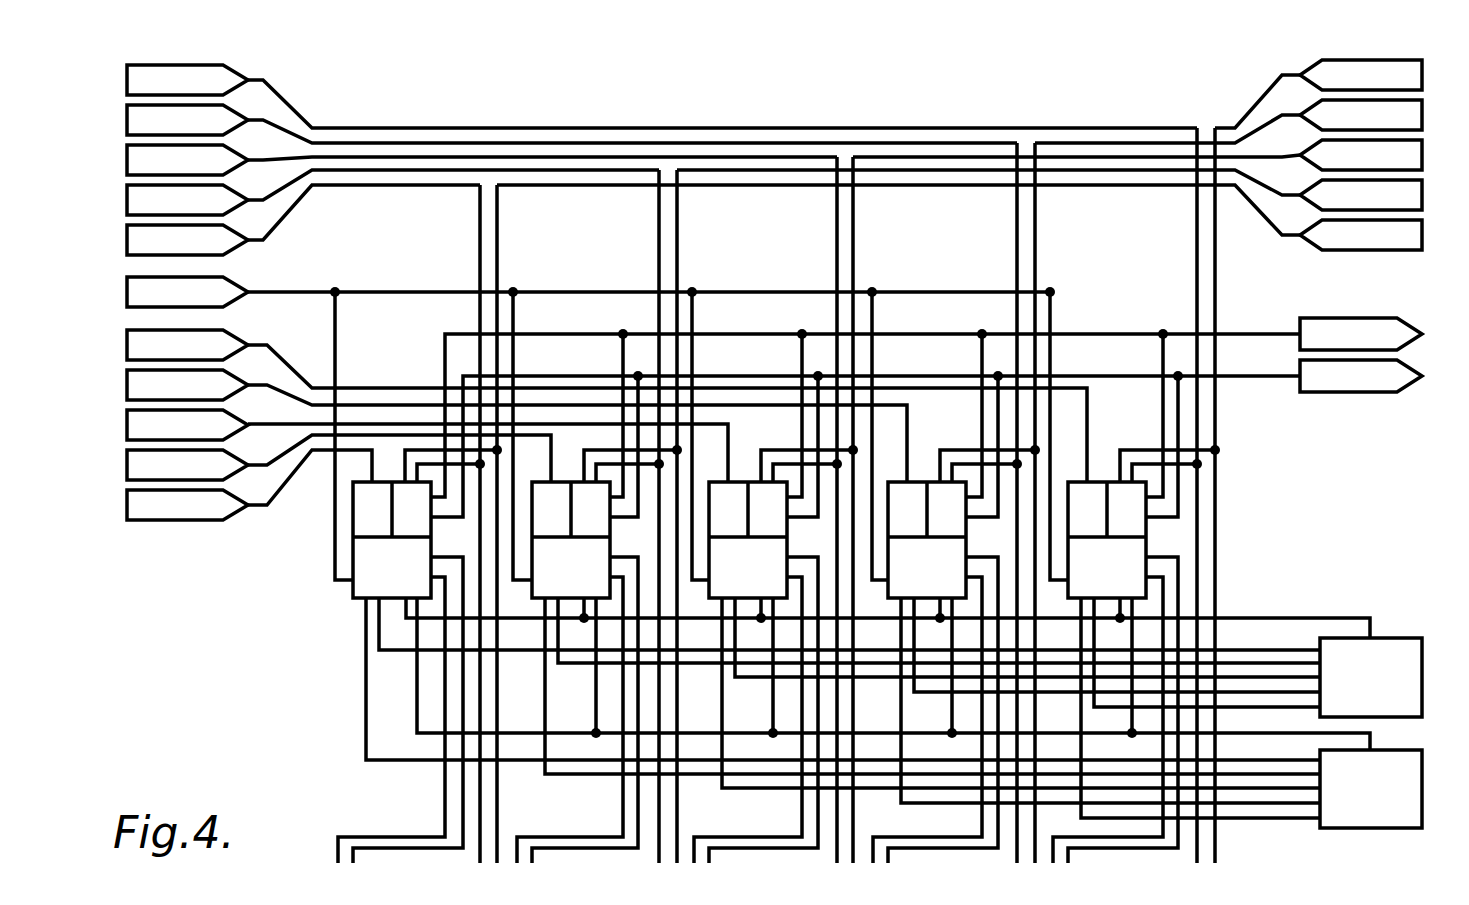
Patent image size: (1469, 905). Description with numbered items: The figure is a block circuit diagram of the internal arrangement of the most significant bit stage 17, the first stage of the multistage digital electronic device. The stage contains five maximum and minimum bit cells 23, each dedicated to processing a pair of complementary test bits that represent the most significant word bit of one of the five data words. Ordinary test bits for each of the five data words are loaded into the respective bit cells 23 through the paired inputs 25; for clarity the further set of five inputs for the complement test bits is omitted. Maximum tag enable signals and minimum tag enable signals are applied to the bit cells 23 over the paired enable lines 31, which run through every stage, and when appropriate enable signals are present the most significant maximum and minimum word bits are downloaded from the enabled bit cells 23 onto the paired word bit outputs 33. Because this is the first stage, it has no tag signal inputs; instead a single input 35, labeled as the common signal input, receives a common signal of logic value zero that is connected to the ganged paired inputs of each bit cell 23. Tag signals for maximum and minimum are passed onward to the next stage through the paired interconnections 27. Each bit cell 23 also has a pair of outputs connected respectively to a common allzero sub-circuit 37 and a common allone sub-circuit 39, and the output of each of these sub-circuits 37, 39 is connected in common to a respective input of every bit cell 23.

The most significant bit stage 17 is at (795, 471).
The maximum and minimum bit cell 23 is at (749, 540).
The paired inputs 25 is at (280, 373).
The paired interconnections 27 is at (340, 858).
The paired enable lines 31 is at (281, 113).
The paired word bit outputs 33 is at (1237, 346).
The single input 35 is at (280, 290).
The allzero sub-circuit 37 is at (1400, 749).
The allone sub-circuit 39 is at (1400, 637).